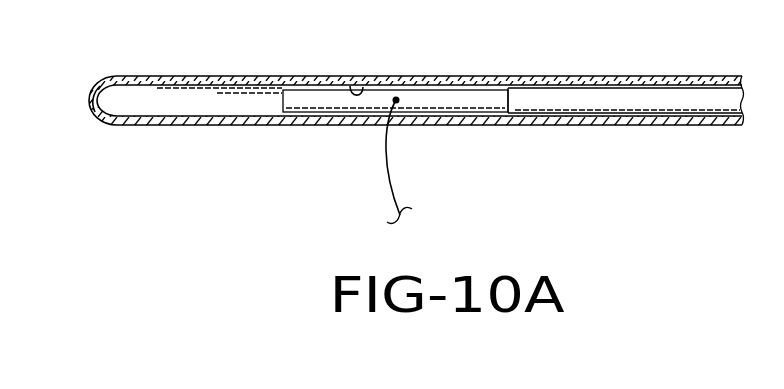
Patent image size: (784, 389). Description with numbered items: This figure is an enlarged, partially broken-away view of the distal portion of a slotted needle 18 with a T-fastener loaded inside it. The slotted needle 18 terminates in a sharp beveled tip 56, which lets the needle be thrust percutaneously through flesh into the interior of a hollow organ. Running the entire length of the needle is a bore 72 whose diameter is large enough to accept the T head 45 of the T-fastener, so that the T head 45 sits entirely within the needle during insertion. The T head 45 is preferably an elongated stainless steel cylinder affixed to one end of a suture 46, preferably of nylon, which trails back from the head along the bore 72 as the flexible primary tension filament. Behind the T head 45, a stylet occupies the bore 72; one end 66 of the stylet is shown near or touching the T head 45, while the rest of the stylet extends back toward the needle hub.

The slotted needle 18 is at (666, 78).
The T head 45 is at (457, 100).
The suture 46 is at (388, 190).
The sharp beveled tip 56 is at (90, 104).
The end of the stylet 66 is at (556, 98).
The bore 72 is at (350, 88).